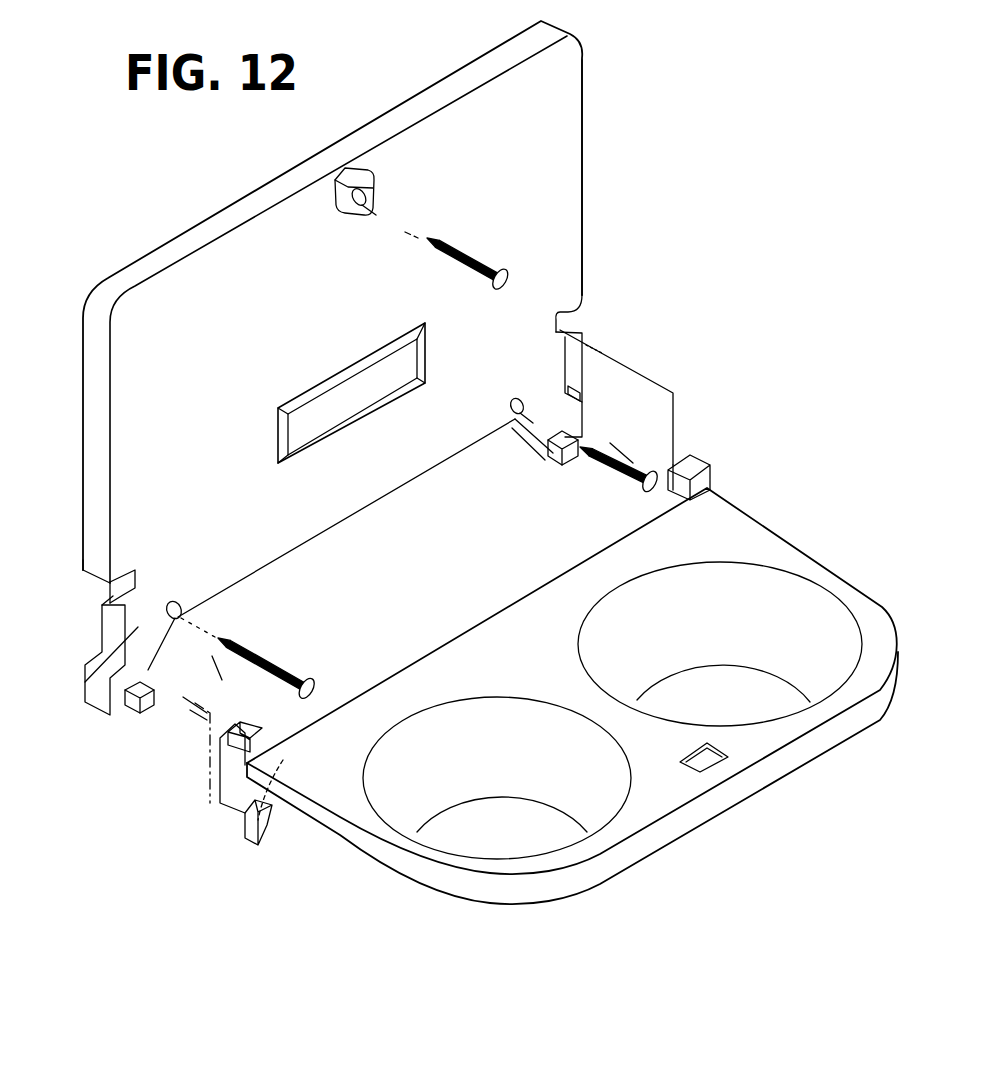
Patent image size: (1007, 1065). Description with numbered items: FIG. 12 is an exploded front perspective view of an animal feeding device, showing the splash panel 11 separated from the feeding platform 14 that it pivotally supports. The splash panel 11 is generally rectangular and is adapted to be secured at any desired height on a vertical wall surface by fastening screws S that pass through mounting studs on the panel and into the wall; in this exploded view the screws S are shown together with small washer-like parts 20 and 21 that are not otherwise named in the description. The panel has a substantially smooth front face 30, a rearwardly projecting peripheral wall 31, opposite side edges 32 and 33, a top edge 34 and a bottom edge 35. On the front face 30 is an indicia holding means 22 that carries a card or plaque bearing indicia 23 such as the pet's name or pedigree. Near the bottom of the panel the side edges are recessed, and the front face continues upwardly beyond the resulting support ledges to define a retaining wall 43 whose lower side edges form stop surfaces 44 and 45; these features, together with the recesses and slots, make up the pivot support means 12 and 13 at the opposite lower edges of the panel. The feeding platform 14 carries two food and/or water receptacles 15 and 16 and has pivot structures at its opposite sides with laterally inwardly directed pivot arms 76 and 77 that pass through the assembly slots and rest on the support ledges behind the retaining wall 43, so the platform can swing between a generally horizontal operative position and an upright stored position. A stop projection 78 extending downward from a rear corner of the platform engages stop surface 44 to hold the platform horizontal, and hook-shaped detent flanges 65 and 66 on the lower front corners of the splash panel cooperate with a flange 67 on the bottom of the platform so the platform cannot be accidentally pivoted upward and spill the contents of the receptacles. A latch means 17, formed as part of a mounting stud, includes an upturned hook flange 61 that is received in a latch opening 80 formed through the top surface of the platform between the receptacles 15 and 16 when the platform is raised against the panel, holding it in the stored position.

The splash panel 11 is at (590, 190).
The pivot support means 12 is at (118, 578).
The pivot support means 13 is at (548, 300).
The feeding platform 14 is at (572, 696).
The food and/or water receptacle 15 is at (502, 812).
The food and/or water receptacle 16 is at (720, 680).
The latch means 17 is at (385, 190).
The washer 20 is at (178, 602).
The washer 21 is at (508, 407).
The indicia holding means 22 is at (351, 395).
The indicia 23 is at (297, 440).
The front face 30 is at (357, 319).
The peripheral wall 31 is at (97, 483).
The side edge 32 is at (108, 423).
The side edge 33 is at (587, 152).
The top edge 34 is at (190, 262).
The bottom edge 35 is at (290, 558).
The retaining wall 43 is at (553, 350).
The stop surface 44 is at (85, 690).
The stop surface 45 is at (572, 408).
The hook flange 61 is at (403, 180).
The detent flange 65 is at (148, 712).
The detent flange 66 is at (562, 472).
The detent flange 67 is at (306, 833).
The pivot arm 76 is at (265, 748).
The pivot arm 77 is at (703, 472).
The stop projection 78 is at (265, 820).
The latch opening 80 is at (692, 767).
The fastening screw S is at (480, 262).